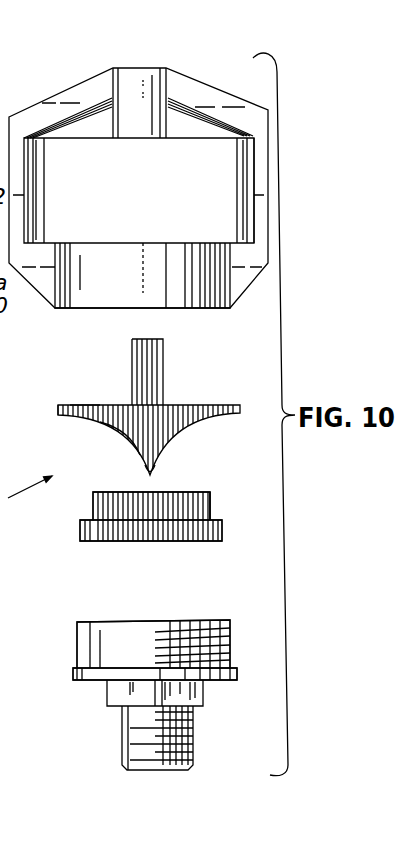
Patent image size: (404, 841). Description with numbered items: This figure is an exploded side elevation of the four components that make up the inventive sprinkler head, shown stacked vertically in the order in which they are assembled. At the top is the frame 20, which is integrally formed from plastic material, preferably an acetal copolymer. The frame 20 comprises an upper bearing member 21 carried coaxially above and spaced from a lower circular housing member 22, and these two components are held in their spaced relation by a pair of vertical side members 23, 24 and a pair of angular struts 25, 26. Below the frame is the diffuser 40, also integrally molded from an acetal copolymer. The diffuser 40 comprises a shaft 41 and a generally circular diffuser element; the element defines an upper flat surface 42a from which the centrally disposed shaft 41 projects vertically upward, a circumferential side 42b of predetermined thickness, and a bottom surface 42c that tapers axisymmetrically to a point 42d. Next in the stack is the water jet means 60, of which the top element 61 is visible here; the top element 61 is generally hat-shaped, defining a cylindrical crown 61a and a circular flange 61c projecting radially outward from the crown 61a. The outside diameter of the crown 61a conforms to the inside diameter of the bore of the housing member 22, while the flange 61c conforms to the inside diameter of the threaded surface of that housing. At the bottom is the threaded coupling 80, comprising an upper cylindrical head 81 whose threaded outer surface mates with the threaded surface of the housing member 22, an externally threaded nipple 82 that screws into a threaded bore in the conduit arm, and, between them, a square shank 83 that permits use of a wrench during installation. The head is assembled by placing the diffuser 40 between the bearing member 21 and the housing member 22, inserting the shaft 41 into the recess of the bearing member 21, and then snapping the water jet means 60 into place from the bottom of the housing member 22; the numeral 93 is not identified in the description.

The frame 20 is at (196, 74).
The upper bearing member 21 is at (140, 77).
The lower circular housing member 22 is at (137, 248).
The vertical side member 23 is at (12, 199).
The vertical side member 24 is at (250, 198).
The angular strut 25 is at (73, 63).
The angular strut 26 is at (218, 98).
The diffuser 40 is at (193, 403).
The shaft 41 is at (132, 366).
The upper flat surface 42a is at (85, 404).
The circumferential side 42b is at (58, 414).
The bottom surface 42c is at (123, 435).
The point 42d is at (150, 474).
The water jet means 60 is at (210, 490).
The top element 61 is at (95, 508).
The cylindrical crown 61a is at (211, 500).
The circular flange 61c is at (80, 540).
The threaded coupling 80 is at (208, 620).
The upper cylindrical head 81 is at (77, 640).
The externally threaded nipple 82 is at (125, 745).
The square shank 83 is at (120, 697).
The partial reference (cut off) 93 is at (12, 606).